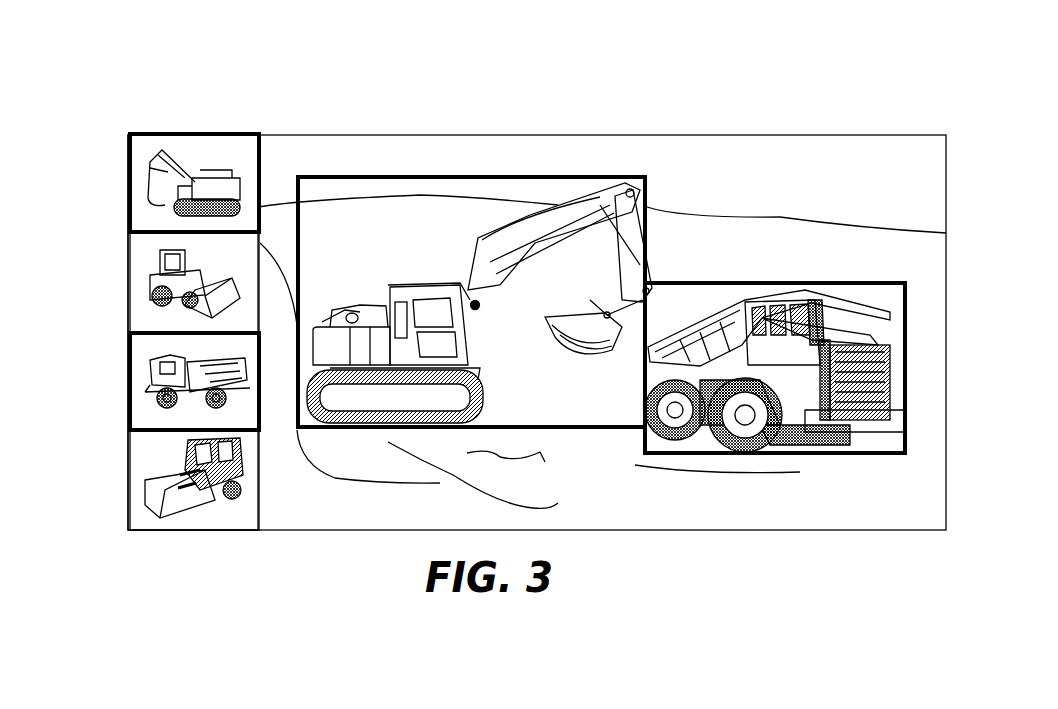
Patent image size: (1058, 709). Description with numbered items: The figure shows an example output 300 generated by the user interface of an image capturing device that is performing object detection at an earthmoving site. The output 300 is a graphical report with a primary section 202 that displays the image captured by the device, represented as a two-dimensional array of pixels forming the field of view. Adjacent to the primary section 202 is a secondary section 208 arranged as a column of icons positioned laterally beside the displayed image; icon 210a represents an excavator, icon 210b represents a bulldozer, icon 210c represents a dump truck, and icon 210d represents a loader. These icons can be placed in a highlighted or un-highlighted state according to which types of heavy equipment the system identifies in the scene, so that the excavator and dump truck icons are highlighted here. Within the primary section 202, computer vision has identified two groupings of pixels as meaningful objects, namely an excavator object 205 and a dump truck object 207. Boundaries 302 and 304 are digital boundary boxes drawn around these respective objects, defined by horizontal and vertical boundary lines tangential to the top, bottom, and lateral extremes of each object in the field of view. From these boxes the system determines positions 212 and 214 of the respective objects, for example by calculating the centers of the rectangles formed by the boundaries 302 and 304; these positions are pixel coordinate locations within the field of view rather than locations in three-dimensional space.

The output 300 is at (842, 96).
The primary section 202 is at (700, 532).
The secondary section 208 is at (196, 106).
The icon 210a is at (128, 179).
The icon 210b is at (128, 281).
The icon 210c is at (128, 374).
The icon 210d is at (128, 473).
The boundary 302 is at (455, 175).
The meaningful object 205 is at (408, 285).
The position 212 is at (478, 308).
The boundary 304 is at (790, 283).
The meaningful object 207 is at (745, 300).
The position 214 is at (818, 305).